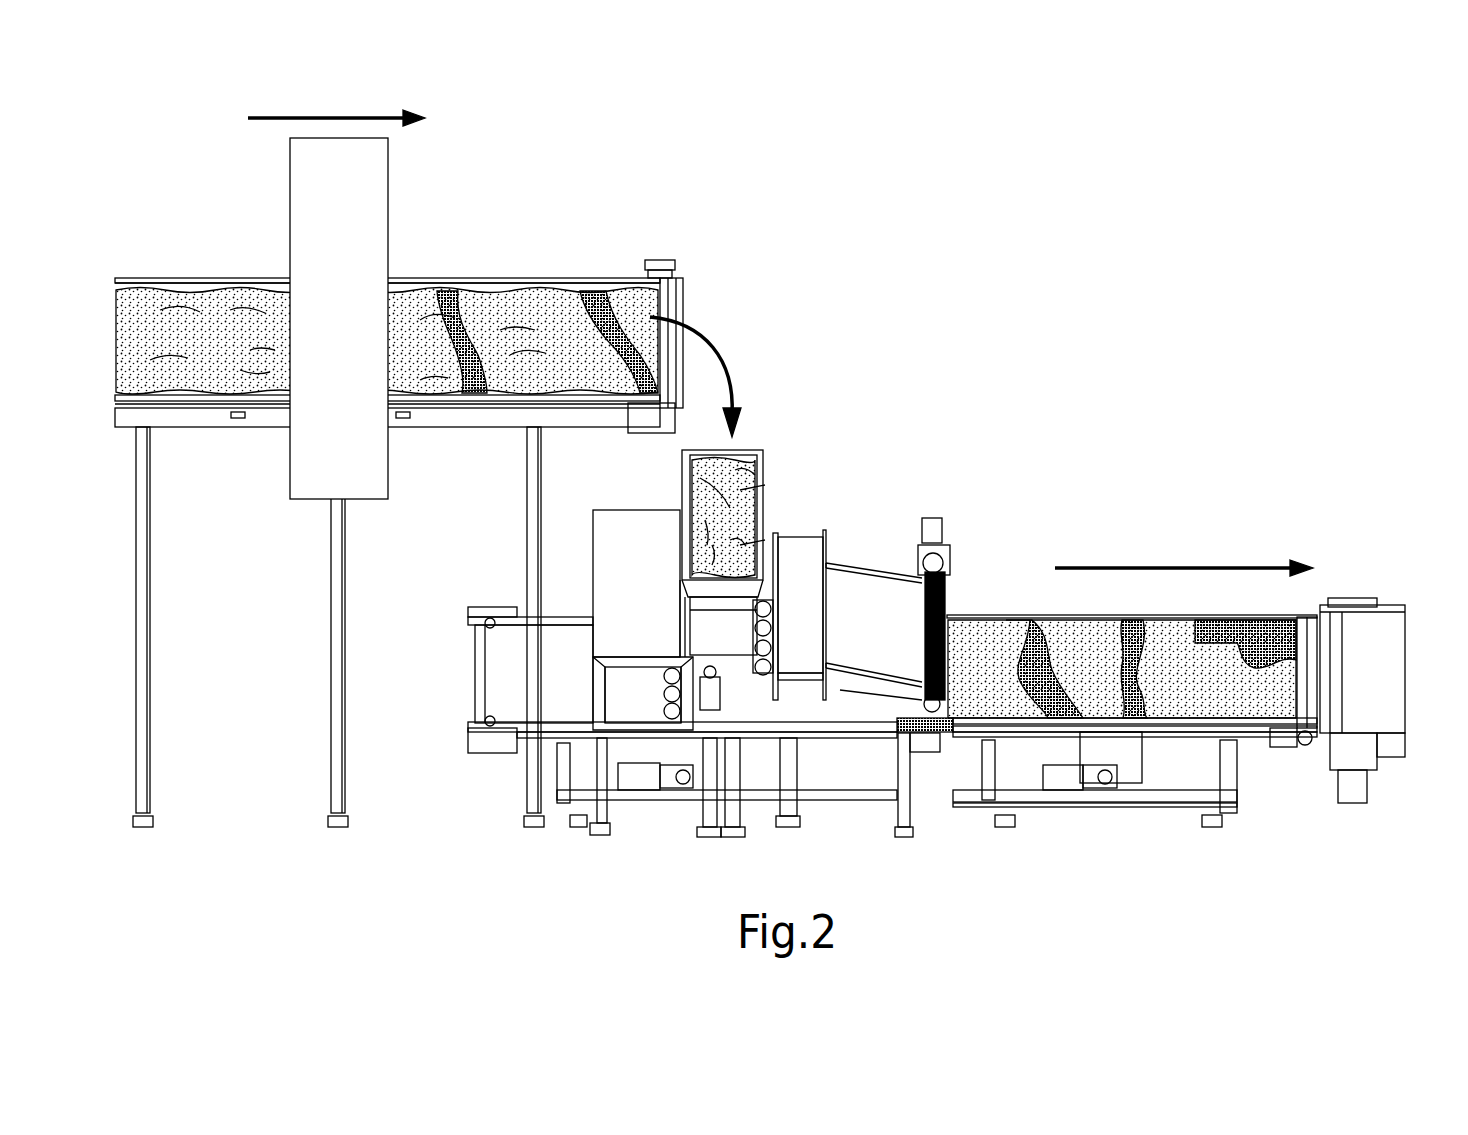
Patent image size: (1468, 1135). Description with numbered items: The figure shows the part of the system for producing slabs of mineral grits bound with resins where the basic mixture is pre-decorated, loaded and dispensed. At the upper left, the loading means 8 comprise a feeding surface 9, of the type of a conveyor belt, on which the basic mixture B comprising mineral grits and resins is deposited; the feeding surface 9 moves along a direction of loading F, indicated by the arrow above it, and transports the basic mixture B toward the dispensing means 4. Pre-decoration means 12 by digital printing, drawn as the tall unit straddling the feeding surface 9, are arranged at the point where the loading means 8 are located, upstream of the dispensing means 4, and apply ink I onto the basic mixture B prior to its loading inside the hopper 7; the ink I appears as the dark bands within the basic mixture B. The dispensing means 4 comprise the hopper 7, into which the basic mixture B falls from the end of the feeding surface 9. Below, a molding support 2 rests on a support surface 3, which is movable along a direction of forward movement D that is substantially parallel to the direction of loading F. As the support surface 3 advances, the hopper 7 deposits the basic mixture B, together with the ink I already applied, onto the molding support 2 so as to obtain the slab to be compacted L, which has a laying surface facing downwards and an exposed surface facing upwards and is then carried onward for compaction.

The molding support 2 is at (1295, 598).
The support surface 3 is at (502, 687).
The dispensing means 4 is at (800, 525).
The hopper 7 is at (707, 592).
The loading means 8 is at (158, 274).
The feeding surface 9 is at (612, 287).
The pre-decoration means 12 is at (303, 208).
The basic mixture B is at (213, 365).
The ink I is at (595, 298).
The direction of loading F is at (323, 113).
The direction of forward movement D is at (1163, 568).
The slab to be compacted L is at (1243, 716).